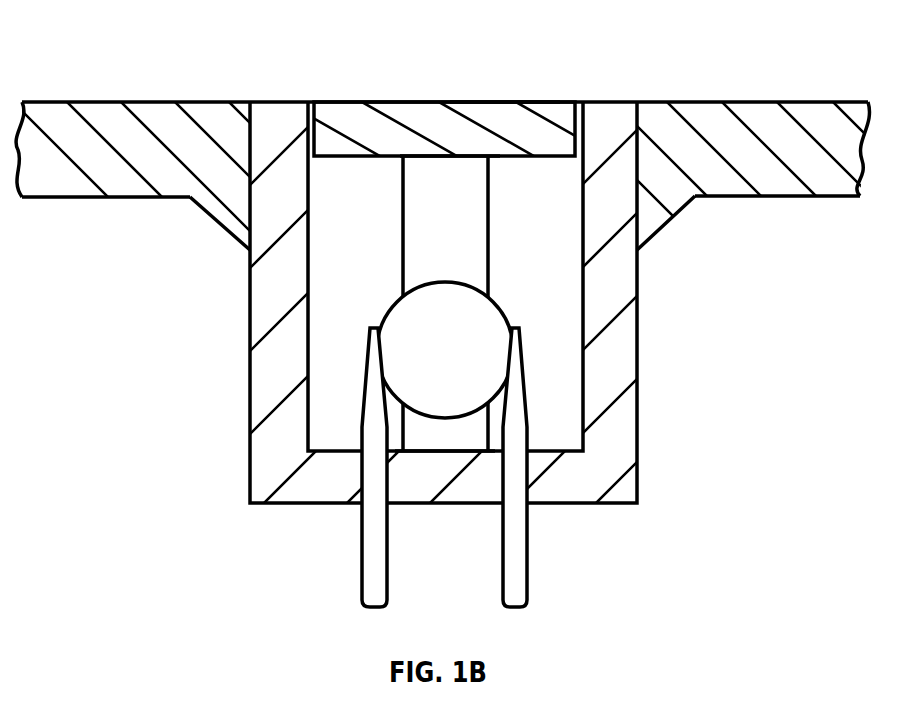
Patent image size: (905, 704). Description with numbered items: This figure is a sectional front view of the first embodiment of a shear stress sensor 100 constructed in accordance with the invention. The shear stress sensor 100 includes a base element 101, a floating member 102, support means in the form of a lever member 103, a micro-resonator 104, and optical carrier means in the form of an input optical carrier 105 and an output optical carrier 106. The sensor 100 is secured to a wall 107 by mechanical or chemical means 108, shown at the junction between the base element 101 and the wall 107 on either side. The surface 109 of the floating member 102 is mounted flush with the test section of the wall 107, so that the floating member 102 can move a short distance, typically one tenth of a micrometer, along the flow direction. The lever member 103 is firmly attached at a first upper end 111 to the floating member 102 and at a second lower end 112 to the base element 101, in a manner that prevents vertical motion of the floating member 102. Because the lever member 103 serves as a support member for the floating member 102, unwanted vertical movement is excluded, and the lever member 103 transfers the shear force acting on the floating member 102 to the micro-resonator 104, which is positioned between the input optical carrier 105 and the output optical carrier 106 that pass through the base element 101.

The shear stress sensor 100 is at (91, 436).
The base element 101 is at (268, 500).
The floating member 102 is at (440, 115).
The lever member 103 is at (428, 243).
The micro-resonator 104 is at (483, 323).
The input optical carrier 105 is at (360, 550).
The output optical carrier 106 is at (528, 555).
The wall 107 is at (148, 102).
The mechanical or chemical means 108 is at (215, 228).
The surface 109 is at (495, 100).
The first upper end 111 is at (445, 157).
The second lower end 112 is at (453, 453).